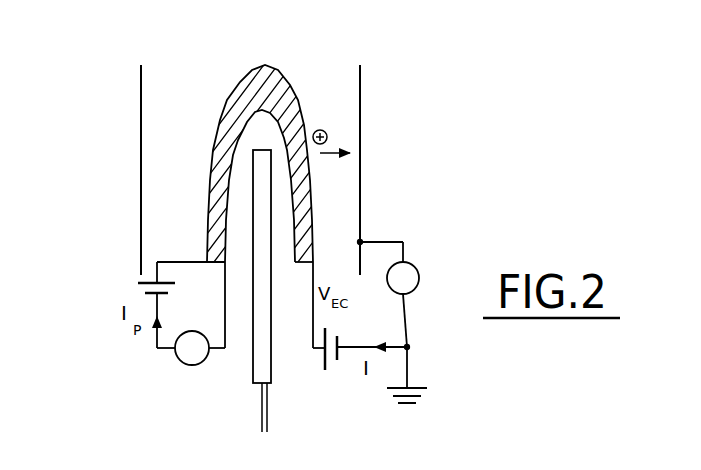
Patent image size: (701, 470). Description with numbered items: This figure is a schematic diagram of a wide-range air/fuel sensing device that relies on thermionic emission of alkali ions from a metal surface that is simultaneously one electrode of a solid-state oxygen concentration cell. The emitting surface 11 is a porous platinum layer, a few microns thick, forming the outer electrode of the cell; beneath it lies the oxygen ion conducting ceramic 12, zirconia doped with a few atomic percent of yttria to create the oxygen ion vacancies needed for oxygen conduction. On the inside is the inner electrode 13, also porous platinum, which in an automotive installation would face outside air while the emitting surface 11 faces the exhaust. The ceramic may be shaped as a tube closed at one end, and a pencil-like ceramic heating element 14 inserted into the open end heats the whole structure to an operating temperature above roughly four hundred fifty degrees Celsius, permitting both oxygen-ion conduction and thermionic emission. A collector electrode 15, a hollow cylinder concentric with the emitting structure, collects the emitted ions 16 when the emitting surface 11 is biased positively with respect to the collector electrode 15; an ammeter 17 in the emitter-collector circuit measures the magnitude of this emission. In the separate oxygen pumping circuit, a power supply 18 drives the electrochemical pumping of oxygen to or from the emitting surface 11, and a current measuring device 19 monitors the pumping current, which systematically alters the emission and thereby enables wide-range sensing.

The emitting surface 11 is at (265, 62).
The oxygen ion conducting ceramic 12 is at (272, 87).
The inner electrode 13 is at (244, 125).
The ceramic heating element 14 is at (257, 391).
The collector electrode 15 is at (376, 91).
The emitted ions 16 is at (324, 163).
The ammeter 17 is at (432, 266).
The power supply 18 is at (132, 283).
The current measuring device 19 is at (182, 367).